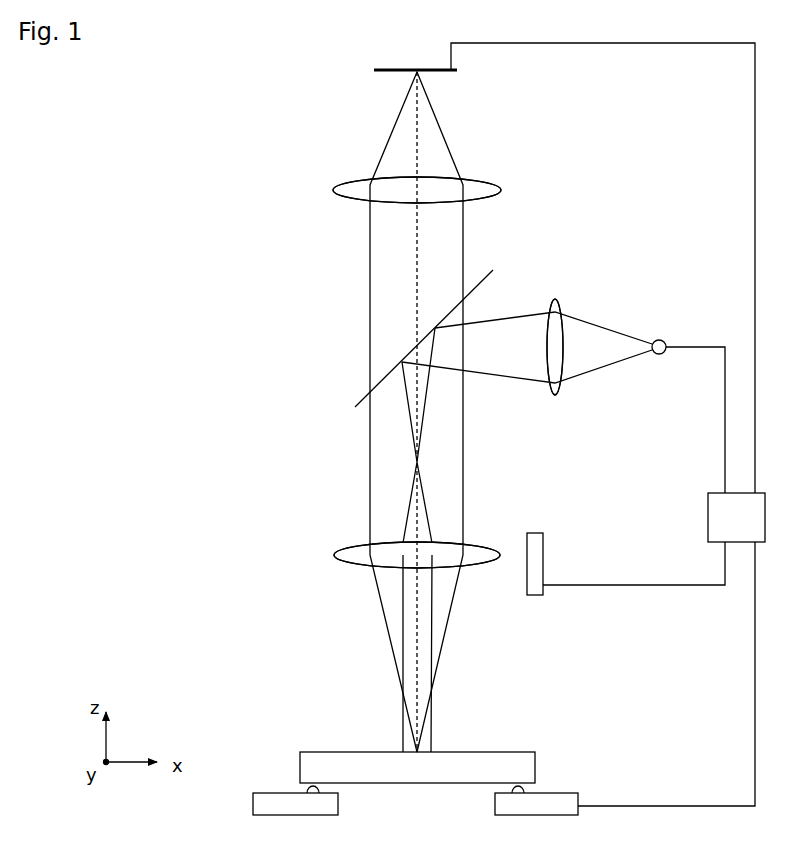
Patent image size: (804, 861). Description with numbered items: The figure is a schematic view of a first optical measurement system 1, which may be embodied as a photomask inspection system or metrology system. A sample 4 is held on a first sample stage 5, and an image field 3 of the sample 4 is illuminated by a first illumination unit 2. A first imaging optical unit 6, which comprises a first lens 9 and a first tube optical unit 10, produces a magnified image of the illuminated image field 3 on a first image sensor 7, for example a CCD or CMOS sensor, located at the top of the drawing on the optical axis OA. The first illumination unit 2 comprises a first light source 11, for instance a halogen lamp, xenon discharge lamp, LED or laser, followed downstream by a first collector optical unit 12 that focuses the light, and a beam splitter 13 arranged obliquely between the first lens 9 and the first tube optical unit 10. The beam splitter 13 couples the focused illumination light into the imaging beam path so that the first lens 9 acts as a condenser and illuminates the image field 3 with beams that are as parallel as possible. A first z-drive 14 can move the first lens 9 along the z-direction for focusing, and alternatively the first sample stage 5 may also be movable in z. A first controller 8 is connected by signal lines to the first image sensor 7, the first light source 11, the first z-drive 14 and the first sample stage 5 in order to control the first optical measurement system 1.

The first optical measurement system 1 is at (495, 182).
The first illumination unit 2 is at (560, 301).
The image field 3 is at (423, 752).
The sample 4 is at (517, 752).
The first sample stage 5 is at (263, 793).
The first imaging optical unit 6 is at (352, 571).
The first image sensor 7 is at (387, 74).
The first controller 8 is at (708, 510).
The first lens 9 is at (337, 555).
The first tube optical unit 10 is at (333, 190).
The first light source 11 is at (660, 356).
The first collector optical unit 12 is at (556, 396).
The beam splitter 13 is at (360, 398).
The first z-drive 14 is at (543, 553).
The optical axis OA is at (417, 310).